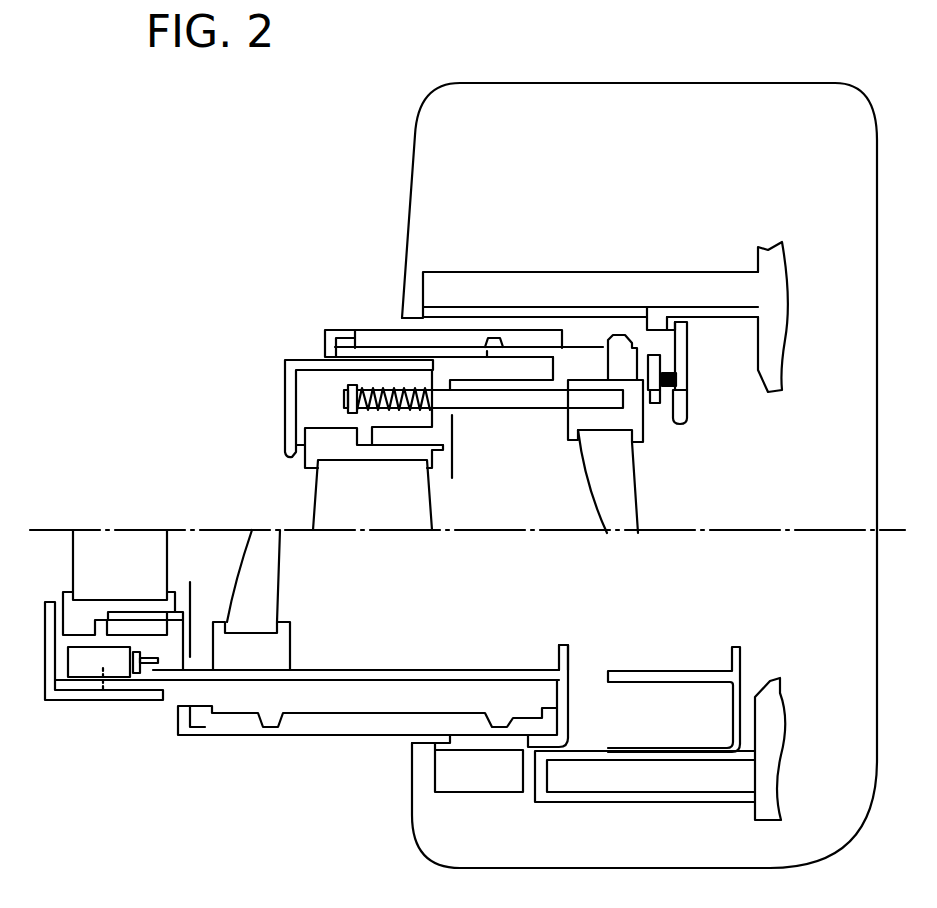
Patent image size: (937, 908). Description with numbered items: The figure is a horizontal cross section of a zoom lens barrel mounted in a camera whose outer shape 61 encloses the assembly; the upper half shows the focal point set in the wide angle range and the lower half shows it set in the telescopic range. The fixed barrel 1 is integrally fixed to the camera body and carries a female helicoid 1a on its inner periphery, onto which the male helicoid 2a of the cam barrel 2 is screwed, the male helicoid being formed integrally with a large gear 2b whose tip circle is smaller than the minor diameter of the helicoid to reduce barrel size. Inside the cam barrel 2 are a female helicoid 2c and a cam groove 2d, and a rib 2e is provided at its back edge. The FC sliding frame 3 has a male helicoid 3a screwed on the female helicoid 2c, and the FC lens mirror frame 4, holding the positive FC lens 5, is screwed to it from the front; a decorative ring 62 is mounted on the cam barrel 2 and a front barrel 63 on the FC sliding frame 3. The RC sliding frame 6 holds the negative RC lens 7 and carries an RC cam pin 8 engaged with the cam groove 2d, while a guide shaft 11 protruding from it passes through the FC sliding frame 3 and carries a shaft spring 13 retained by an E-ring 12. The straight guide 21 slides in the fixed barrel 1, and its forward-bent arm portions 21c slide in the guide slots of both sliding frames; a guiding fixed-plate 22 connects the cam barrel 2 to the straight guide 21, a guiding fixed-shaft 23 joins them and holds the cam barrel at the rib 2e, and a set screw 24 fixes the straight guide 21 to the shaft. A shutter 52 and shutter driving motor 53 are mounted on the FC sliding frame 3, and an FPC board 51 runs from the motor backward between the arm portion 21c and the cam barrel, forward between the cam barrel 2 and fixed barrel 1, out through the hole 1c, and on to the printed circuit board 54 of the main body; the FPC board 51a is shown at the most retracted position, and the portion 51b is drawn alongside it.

The outer shape of the camera 61 is at (413, 152).
The fixed barrel 1 is at (557, 270).
The female helicoid 1a is at (732, 310).
The hole 1c is at (523, 776).
The cam barrel 2 is at (377, 327).
The male helicoid 2a is at (600, 300).
The large gear 2b is at (667, 307).
The female helicoid 2c is at (625, 345).
The cam groove 2d is at (440, 347).
The rib 2e is at (668, 340).
The FC sliding frame 3 is at (453, 432).
The male helicoid 3a is at (510, 332).
The FC lens mirror frame 4 is at (305, 443).
The FC lens 5 is at (313, 507).
The RC sliding frame 6 is at (568, 428).
The RC lens 7 is at (603, 503).
The RC cam pin 8 is at (657, 304).
The guide shaft 11 is at (506, 414).
The E-ring 12 is at (347, 410).
The shaft spring 13 is at (373, 385).
The straight guide 21 is at (688, 413).
The arm portions 21c is at (400, 670).
The guiding fixed-plate 22 is at (652, 403).
The guiding fixed-shaft 23 is at (668, 400).
The set screw 24 is at (690, 378).
The FPC board 51 is at (340, 686).
The FPC board at most retracted position 51a is at (688, 680).
The carriage side wall 51b is at (577, 700).
The shutter 52 is at (193, 603).
The shutter driving motor 53 is at (100, 692).
The printed circuit board 54 is at (642, 803).
The decorative ring 62 is at (337, 328).
The front barrel 63 is at (300, 360).